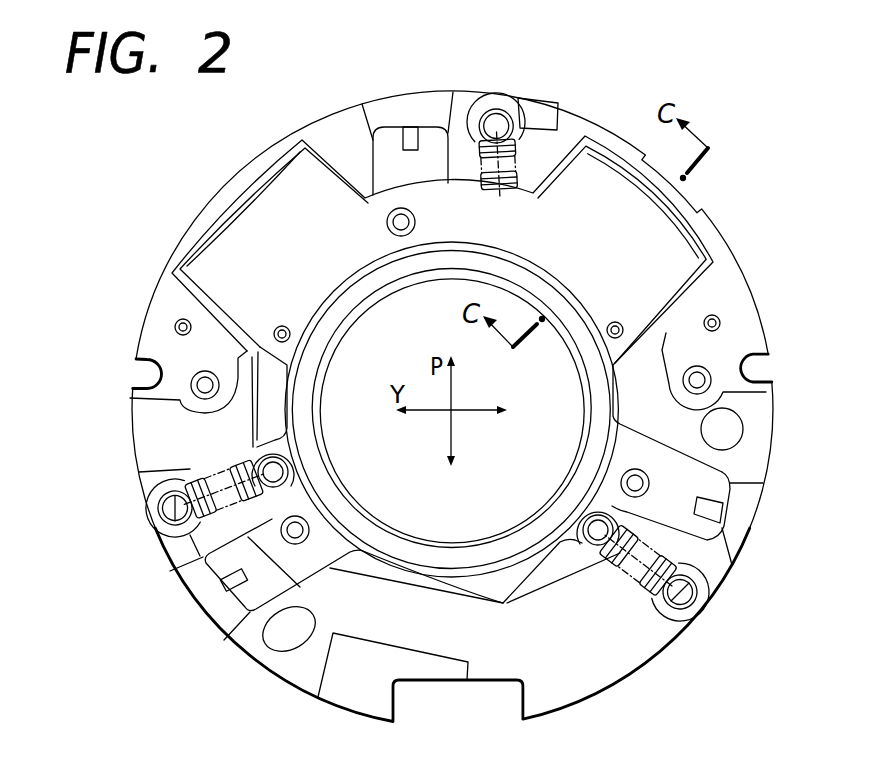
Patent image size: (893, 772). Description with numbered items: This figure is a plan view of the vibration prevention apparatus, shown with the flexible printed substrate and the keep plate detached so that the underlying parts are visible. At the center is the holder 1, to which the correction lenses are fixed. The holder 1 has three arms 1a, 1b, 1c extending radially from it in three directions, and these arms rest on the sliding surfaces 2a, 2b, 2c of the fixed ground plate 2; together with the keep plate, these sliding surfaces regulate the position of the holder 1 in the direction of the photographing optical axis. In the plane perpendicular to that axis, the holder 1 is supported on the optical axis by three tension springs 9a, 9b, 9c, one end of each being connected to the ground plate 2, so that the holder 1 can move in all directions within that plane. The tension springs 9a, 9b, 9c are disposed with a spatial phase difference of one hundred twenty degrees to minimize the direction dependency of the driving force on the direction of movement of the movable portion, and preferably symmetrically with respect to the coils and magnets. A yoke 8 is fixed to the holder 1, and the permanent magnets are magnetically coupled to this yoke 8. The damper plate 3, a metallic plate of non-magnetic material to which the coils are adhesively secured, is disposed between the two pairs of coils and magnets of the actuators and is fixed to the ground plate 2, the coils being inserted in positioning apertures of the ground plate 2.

The holder 1 is at (487, 562).
The arm 1a is at (390, 142).
The arm 1b is at (700, 532).
The arm 1c is at (243, 592).
The ground plate 2 is at (757, 450).
The sliding surface 2a is at (427, 98).
The sliding surface 2b is at (743, 517).
The sliding surface 2c is at (228, 628).
The damper plate 3 is at (705, 275).
The yoke 8 is at (596, 180).
The tension spring 9a is at (532, 150).
The tension spring 9b is at (657, 585).
The tension spring 9c is at (167, 470).